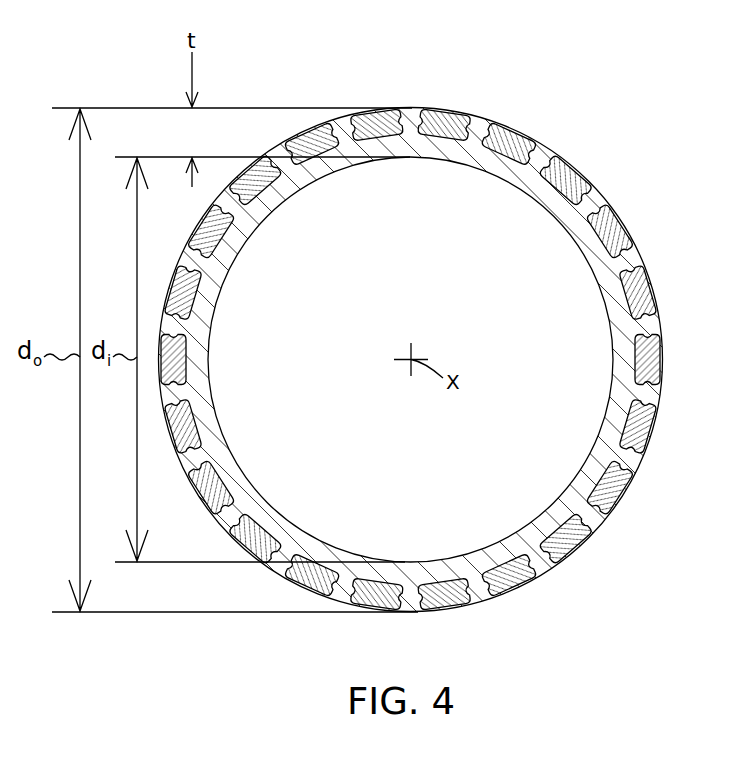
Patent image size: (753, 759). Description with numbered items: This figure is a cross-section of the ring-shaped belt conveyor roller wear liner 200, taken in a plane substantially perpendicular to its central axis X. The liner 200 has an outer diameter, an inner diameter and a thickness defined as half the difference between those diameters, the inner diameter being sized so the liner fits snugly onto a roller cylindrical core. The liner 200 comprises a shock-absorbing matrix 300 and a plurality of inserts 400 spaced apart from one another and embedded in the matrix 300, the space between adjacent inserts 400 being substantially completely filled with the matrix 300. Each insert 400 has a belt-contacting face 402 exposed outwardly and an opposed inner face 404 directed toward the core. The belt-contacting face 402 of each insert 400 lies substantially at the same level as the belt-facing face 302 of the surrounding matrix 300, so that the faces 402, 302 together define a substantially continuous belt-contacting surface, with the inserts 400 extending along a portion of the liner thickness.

The belt conveyor roller wear liner 200 is at (635, 98).
The shock-absorbing matrix 300 is at (573, 215).
The belt-facing face of the matrix 302 is at (547, 143).
The inserts 400 is at (442, 118).
The belt-contacting face of the insert 402 is at (513, 130).
The inner face of the insert 404 is at (617, 230).